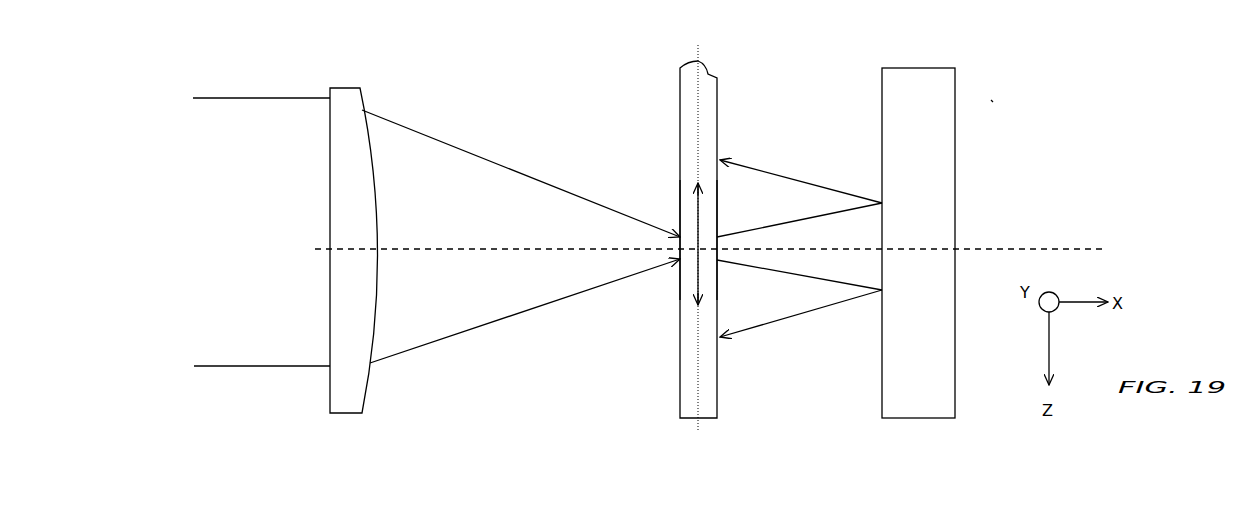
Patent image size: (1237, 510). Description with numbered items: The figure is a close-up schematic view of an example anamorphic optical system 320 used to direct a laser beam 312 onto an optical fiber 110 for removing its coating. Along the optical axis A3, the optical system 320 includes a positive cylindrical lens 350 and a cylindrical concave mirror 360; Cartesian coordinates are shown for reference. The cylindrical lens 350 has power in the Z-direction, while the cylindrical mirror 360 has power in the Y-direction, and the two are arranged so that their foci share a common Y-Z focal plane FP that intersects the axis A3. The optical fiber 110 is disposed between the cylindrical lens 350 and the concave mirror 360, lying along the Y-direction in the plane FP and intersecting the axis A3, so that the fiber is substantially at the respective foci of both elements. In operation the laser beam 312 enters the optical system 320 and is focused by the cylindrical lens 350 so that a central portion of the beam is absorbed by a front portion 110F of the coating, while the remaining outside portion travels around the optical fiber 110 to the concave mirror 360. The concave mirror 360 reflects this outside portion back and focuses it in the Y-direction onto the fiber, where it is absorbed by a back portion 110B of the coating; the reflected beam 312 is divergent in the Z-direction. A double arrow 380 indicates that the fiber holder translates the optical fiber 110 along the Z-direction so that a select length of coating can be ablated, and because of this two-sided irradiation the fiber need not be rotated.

The positive cylindrical lens 350 is at (340, 92).
The laser beam 312 is at (750, 170).
The optical fiber 110 is at (670, 78).
The front portion 110F is at (638, 236).
The back portion 110B is at (722, 228).
The focal plane FP is at (698, 52).
The double arrow 380 is at (676, 198).
The cylindrical concave mirror 360 is at (918, 67).
The anamorphic optical system 320 is at (993, 102).
The optical axis A3 is at (996, 247).